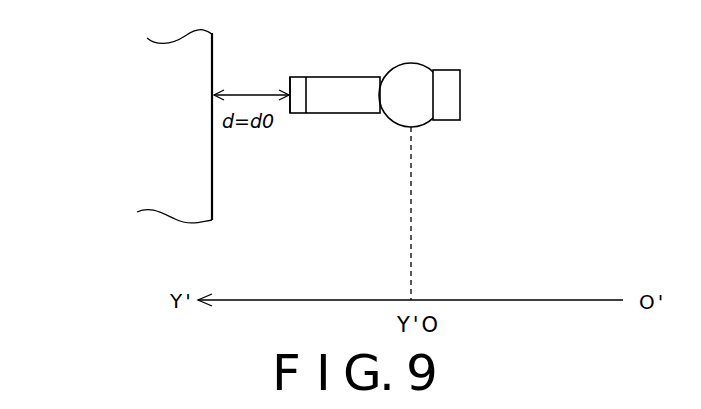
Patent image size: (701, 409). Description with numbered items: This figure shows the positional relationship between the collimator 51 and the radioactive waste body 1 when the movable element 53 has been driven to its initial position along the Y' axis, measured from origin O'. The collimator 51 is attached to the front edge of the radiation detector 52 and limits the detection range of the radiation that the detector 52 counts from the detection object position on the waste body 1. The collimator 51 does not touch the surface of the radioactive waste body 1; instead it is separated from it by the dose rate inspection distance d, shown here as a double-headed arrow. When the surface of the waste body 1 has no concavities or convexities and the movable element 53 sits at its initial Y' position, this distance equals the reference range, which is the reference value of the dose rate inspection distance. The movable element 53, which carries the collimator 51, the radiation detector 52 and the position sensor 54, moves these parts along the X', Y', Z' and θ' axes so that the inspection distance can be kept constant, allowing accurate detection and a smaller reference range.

The radioactive waste body 1 is at (192, 47).
The collimator 51 is at (297, 85).
The radiation detector 52 is at (345, 99).
The movable element 53 is at (418, 78).
The position sensor 54 is at (452, 95).